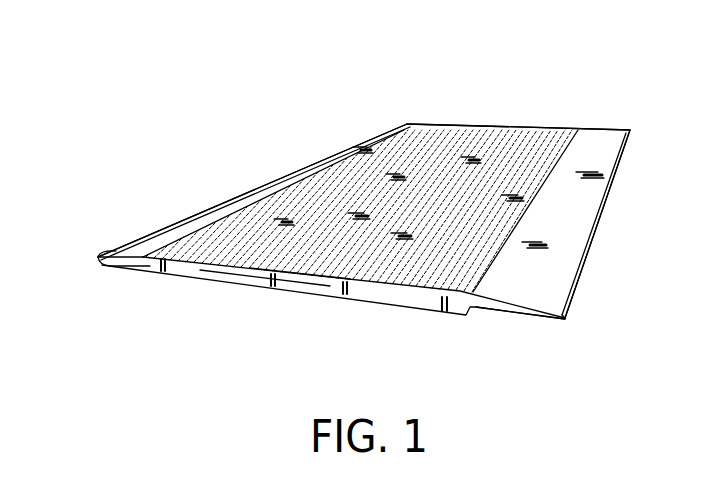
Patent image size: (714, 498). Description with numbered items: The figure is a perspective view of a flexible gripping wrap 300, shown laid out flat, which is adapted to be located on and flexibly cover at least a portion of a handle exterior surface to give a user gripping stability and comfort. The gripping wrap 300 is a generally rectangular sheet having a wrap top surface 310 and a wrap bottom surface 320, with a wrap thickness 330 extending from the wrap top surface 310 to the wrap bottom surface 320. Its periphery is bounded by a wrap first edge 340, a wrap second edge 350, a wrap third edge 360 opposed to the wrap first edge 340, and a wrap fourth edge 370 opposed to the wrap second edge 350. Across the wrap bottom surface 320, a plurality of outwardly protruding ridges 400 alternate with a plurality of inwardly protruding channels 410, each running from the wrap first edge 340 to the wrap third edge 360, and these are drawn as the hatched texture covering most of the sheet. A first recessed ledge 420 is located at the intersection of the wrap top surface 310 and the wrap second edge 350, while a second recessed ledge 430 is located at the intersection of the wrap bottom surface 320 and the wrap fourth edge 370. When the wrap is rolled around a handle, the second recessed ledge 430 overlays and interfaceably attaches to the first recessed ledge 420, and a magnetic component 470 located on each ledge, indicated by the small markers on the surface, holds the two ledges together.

The flexible gripping wrap 300 is at (266, 76).
The wrap top surface 310 is at (265, 290).
The wrap bottom surface 320 is at (592, 143).
The wrap thickness 330 is at (395, 284).
The wrap first edge 340 is at (295, 284).
The wrap second edge 350 is at (607, 205).
The wrap third edge 360 is at (470, 125).
The wrap fourth edge 370 is at (268, 183).
The outwardly protruding ridges 400 is at (192, 259).
The inwardly protruding channels 410 is at (238, 268).
The first recessed ledge 420 is at (530, 313).
The second recessed ledge 430 is at (112, 253).
The magnetic component 470 is at (205, 223).